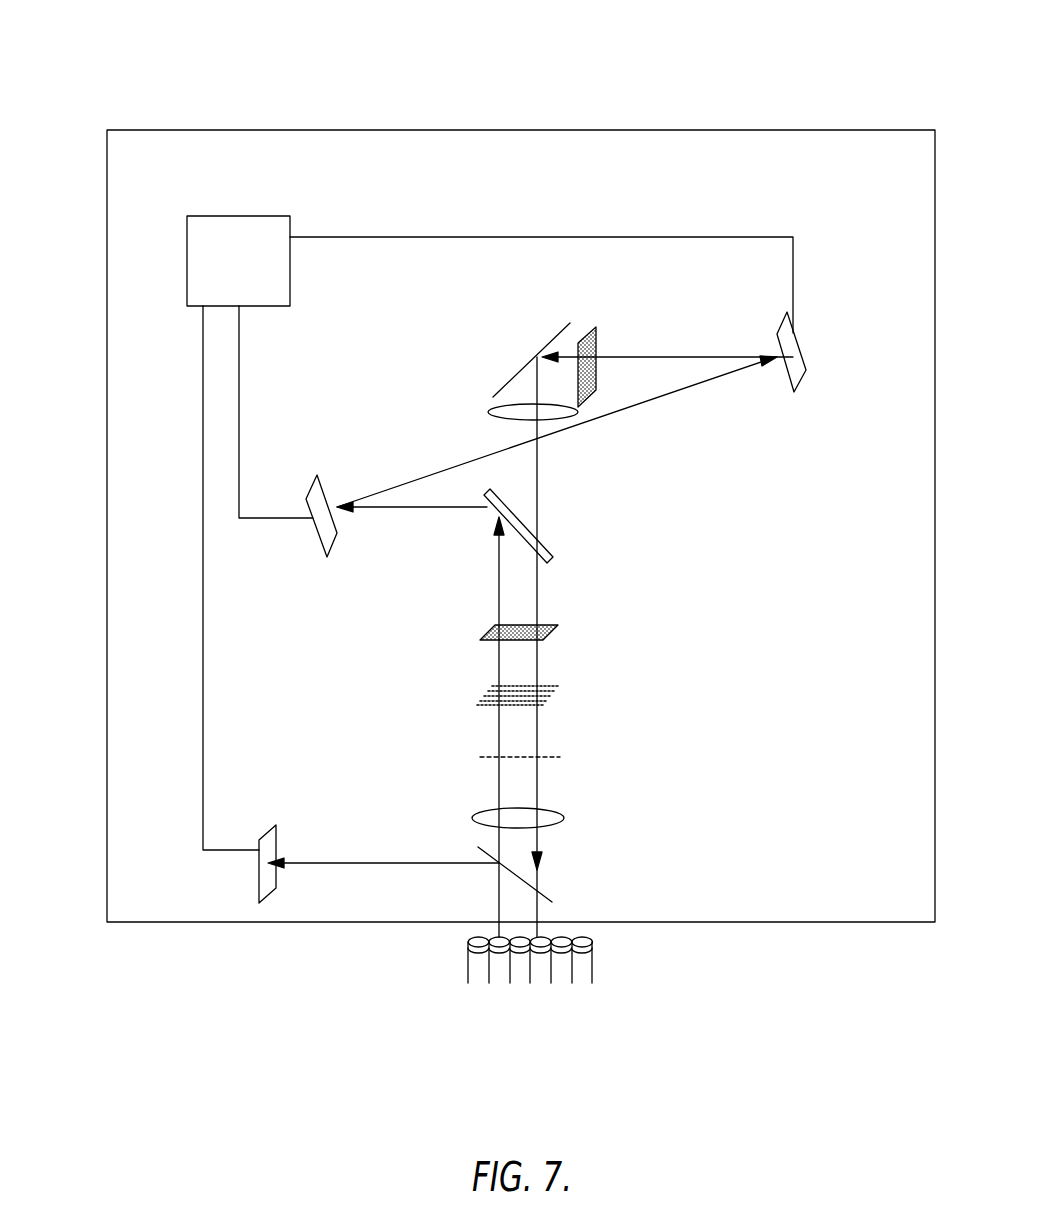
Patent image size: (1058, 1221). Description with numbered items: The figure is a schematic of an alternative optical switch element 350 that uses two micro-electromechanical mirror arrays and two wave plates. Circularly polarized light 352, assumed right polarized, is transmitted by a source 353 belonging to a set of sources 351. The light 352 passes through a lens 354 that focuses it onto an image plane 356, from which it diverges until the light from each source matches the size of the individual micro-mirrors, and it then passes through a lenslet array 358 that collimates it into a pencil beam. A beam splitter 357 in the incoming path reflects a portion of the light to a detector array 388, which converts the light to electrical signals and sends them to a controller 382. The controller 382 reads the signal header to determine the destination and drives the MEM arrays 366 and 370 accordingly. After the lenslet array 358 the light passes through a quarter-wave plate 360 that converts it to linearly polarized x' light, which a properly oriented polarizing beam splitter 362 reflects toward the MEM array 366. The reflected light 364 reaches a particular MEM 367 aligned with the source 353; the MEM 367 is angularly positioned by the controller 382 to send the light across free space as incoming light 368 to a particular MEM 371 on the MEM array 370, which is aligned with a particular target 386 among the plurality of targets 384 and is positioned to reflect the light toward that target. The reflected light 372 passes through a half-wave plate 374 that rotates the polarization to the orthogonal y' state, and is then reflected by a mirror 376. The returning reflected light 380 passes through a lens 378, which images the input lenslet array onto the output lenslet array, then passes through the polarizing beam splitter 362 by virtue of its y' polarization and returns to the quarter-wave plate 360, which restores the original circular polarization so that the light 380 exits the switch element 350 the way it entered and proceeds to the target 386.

The switch element 350 is at (852, 88).
The sources 351 is at (468, 973).
The circularly polarized light 352 is at (498, 844).
The source 353 is at (500, 937).
The lens 354 is at (480, 814).
The image plane 356 is at (480, 758).
The beam splitter 357 is at (542, 893).
The lenslet array 358 is at (480, 695).
The λ/4 plate 360 is at (490, 628).
The polarizing beam splitter 362 is at (572, 560).
The reflected light 364 is at (412, 508).
The MEM array 366 is at (318, 540).
The MEM 367 is at (330, 497).
The incoming light 368 is at (612, 405).
The MEM array 370 is at (806, 345).
The MEM 371 is at (778, 368).
The reflected light 372 is at (638, 356).
The λ/2 plate 374 is at (597, 327).
The mirror 376 is at (540, 345).
The lens 378 is at (478, 403).
The reflected light 380 is at (538, 480).
The controller 382 is at (260, 285).
The targets 384 is at (548, 935).
The target 386 is at (532, 938).
The detector array 388 is at (276, 832).